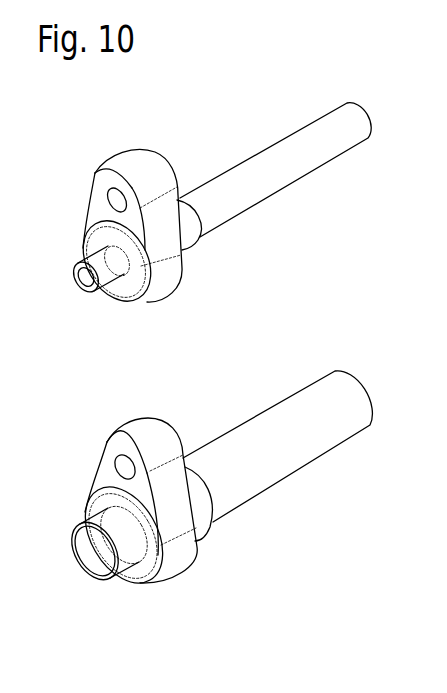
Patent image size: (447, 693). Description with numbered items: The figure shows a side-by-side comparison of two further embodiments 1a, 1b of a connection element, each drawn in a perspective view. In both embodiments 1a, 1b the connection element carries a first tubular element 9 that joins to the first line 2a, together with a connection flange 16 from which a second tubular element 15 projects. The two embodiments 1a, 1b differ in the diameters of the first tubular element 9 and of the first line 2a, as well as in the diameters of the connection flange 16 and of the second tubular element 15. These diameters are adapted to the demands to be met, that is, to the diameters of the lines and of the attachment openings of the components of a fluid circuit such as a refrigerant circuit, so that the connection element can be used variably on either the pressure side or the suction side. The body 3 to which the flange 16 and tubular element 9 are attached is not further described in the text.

The first further embodiment of the connection element 1a is at (100, 159).
The second further embodiment of the connection element 1b is at (97, 418).
The first line 2a is at (270, 162).
The bearing bracket 3 is at (142, 172).
The first tubular element 9 is at (192, 232).
The second tubular element 15 is at (85, 278).
The connection flange 16 is at (127, 283).